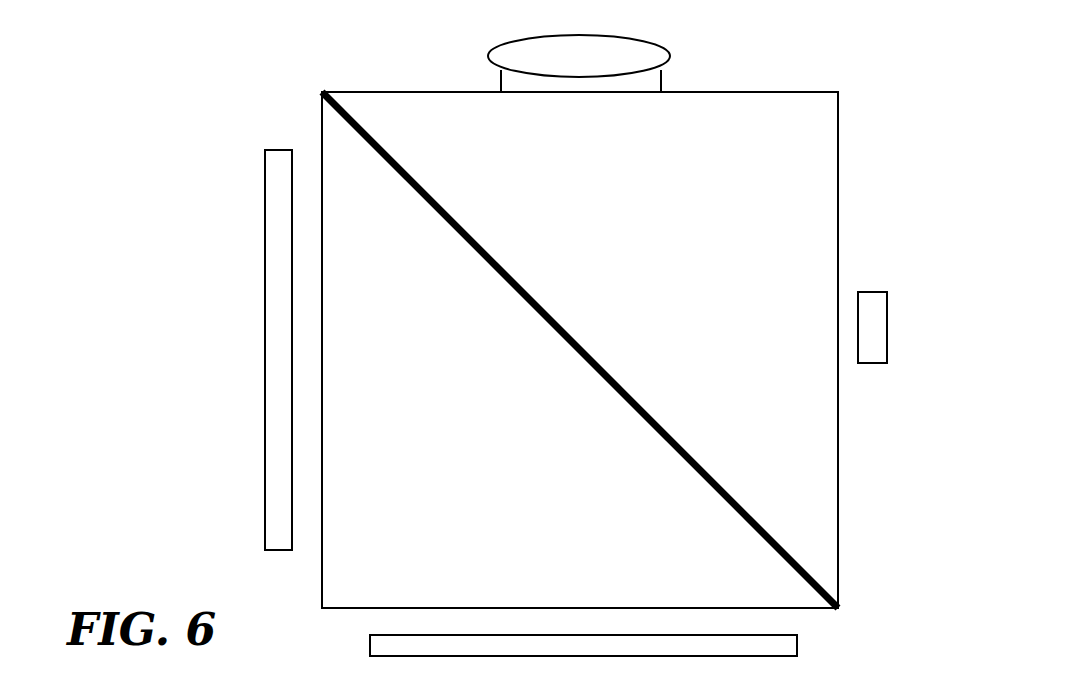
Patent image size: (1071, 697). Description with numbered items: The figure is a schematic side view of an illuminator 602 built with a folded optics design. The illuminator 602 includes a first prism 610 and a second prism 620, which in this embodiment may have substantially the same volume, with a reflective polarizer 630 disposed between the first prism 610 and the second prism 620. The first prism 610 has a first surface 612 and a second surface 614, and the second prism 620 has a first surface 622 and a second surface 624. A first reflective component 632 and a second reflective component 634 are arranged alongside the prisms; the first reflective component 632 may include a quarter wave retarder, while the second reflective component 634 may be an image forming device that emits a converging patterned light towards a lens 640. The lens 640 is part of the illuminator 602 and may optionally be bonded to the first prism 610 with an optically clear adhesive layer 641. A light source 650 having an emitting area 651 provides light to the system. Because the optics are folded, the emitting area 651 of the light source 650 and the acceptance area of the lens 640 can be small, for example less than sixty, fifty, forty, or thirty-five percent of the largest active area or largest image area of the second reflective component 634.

The illuminator 602 is at (141, 140).
The first prism 610 is at (822, 156).
The first surface of first prism 612 is at (838, 218).
The second surface of first prism 614 is at (788, 92).
The second prism 620 is at (357, 568).
The first surface of second prism 622 is at (318, 131).
The second surface of second prism 624 is at (347, 608).
The reflective polarizer 630 is at (780, 540).
The first reflective component 632 is at (278, 447).
The second reflective component 634 is at (783, 643).
The lens 640 is at (557, 53).
The optically clear adhesive layer 641 is at (648, 80).
The light source 650 is at (887, 327).
The emitting area 651 is at (852, 307).